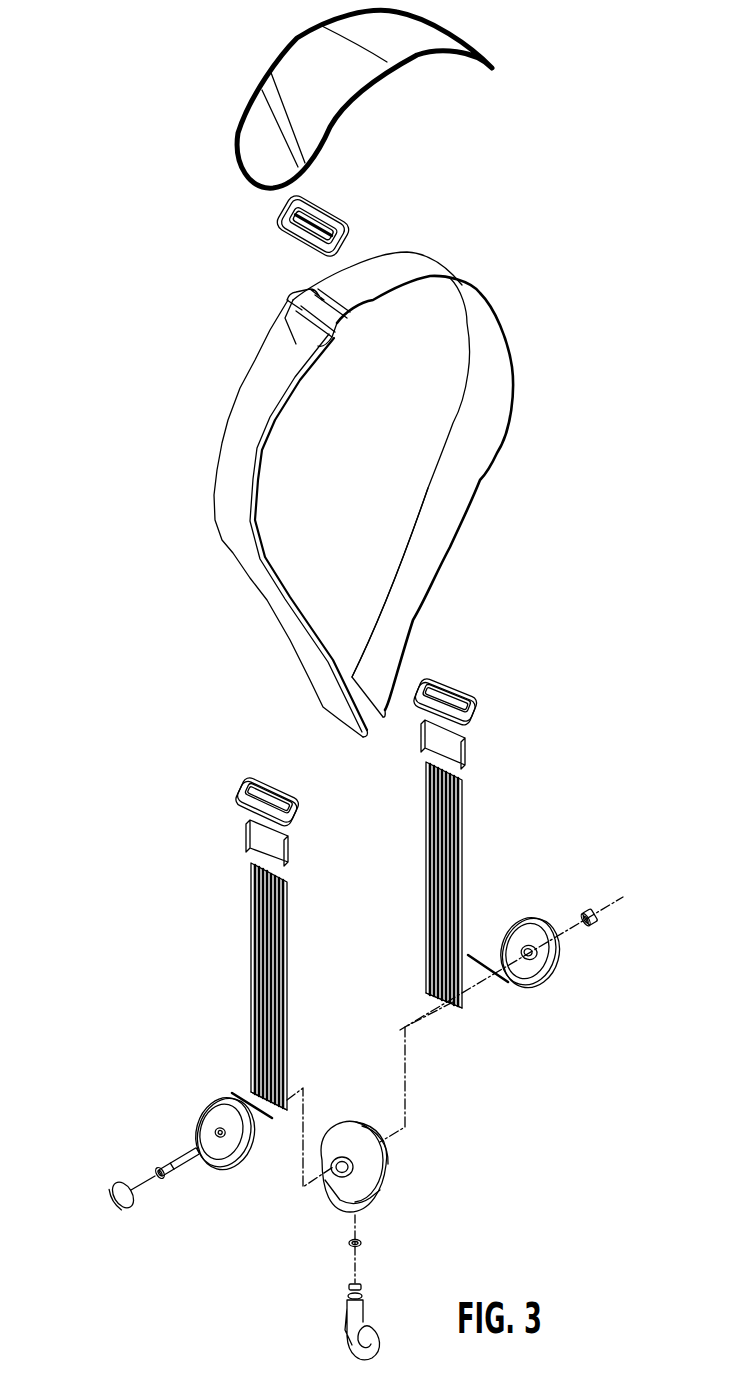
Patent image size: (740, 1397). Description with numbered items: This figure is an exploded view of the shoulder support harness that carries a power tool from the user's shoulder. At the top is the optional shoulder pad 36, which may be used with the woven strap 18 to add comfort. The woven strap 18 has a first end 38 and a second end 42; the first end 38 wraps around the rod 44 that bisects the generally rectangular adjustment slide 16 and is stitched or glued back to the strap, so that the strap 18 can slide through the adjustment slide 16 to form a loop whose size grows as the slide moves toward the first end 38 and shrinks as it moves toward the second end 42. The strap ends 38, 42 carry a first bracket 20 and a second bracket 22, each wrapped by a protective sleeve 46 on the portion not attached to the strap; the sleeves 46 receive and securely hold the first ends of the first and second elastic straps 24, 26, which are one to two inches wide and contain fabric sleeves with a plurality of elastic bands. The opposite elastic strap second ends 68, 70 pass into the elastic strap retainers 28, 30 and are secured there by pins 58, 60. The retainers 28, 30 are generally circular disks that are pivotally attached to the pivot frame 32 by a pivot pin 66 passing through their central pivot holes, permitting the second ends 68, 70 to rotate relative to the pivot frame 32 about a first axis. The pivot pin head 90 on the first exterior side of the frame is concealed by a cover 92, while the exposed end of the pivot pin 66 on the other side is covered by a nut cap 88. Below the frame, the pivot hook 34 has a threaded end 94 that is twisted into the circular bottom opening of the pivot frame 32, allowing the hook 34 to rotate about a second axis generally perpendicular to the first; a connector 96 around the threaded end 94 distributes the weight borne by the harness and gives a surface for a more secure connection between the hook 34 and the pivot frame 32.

The adjustment slide 16 is at (307, 205).
The woven strap 18 is at (234, 453).
The first bracket 20 is at (245, 790).
The second bracket 22 is at (477, 707).
The first elastic strap 24 is at (257, 975).
The second elastic strap 26 is at (455, 868).
The elastic strap retainer 28 is at (210, 1100).
The elastic strap retainer 30 is at (558, 960).
The pivot frame 32 is at (372, 1200).
The pivot hook 34 is at (366, 1312).
The shoulder pad 36 is at (297, 80).
The woven strap first end 38 is at (312, 373).
The woven strap second end 42 is at (380, 687).
The rod 44 is at (332, 207).
The sleeve 46 is at (452, 752).
The pin 58 is at (265, 1118).
The pin 60 is at (500, 970).
The pivot pin 66 is at (180, 1160).
The elastic strap second end 68 is at (252, 1082).
The elastic strap second end 70 is at (467, 997).
The nut cap 88 is at (605, 917).
The pivot pin head 90 is at (162, 1180).
The cover 92 is at (118, 1200).
The threaded end 94 is at (350, 1288).
The connector 96 is at (350, 1242).